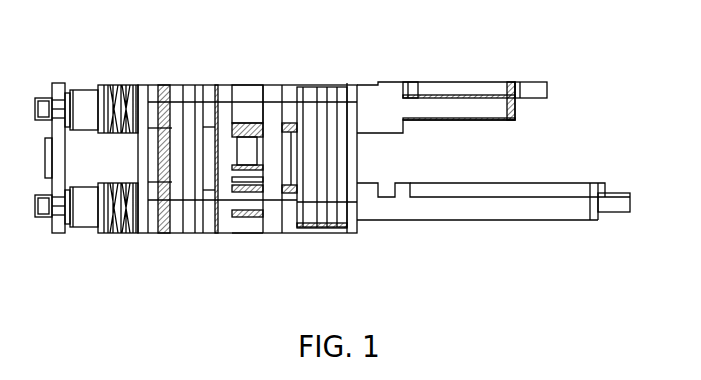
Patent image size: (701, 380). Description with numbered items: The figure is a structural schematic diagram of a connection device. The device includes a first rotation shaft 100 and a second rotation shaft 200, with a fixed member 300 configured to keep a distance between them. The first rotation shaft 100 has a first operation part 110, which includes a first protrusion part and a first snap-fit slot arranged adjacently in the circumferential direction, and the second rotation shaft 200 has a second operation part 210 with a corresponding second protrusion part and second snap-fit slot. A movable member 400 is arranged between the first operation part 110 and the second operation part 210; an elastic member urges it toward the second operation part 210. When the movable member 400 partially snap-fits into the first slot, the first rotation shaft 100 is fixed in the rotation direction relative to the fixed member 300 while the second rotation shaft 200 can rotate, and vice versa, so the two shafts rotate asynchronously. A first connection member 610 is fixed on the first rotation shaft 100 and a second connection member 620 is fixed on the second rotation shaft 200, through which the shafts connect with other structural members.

The first rotation shaft 100 is at (68, 89).
The second rotation shaft 200 is at (70, 229).
The second operation part 210 is at (248, 229).
The first operation part 110 is at (247, 93).
The fixed member 300 is at (278, 148).
The movable member 400 is at (247, 148).
The first connection member 610 is at (490, 93).
The second connection member 620 is at (517, 200).